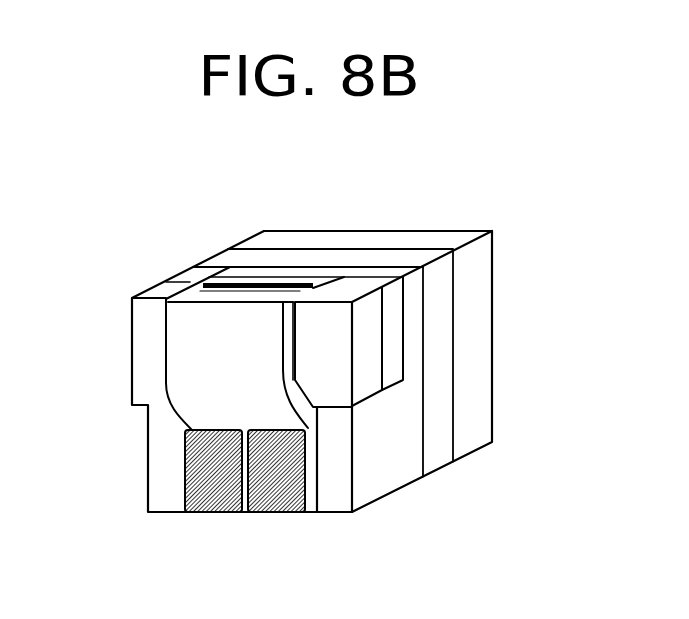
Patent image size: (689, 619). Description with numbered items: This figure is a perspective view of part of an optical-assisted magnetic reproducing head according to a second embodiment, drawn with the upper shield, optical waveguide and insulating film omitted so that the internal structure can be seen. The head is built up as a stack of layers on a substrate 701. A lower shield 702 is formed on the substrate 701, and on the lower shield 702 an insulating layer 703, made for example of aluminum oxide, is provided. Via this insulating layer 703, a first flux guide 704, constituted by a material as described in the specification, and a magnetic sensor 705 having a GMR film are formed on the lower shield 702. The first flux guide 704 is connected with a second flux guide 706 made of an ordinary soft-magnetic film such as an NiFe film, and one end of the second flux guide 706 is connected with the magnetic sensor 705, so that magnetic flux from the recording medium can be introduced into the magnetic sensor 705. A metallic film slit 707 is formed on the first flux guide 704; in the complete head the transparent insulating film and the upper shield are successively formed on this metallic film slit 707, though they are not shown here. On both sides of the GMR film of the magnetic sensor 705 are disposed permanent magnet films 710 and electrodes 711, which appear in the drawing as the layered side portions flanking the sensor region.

The substrate 701 is at (268, 238).
The lower shield 702 is at (440, 401).
The insulating layer 703 is at (268, 272).
The first flux guide 704 is at (318, 462).
The magnetic sensor 705 is at (222, 275).
The second flux guide 706 is at (190, 371).
The metallic film slit 707 is at (327, 513).
The permanent magnet films 710 is at (178, 284).
The electrodes 711 is at (155, 333).